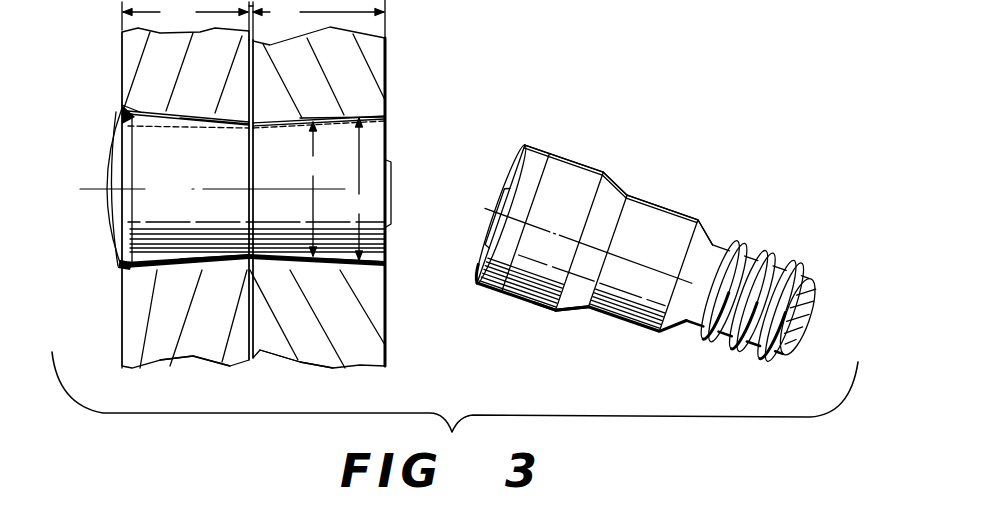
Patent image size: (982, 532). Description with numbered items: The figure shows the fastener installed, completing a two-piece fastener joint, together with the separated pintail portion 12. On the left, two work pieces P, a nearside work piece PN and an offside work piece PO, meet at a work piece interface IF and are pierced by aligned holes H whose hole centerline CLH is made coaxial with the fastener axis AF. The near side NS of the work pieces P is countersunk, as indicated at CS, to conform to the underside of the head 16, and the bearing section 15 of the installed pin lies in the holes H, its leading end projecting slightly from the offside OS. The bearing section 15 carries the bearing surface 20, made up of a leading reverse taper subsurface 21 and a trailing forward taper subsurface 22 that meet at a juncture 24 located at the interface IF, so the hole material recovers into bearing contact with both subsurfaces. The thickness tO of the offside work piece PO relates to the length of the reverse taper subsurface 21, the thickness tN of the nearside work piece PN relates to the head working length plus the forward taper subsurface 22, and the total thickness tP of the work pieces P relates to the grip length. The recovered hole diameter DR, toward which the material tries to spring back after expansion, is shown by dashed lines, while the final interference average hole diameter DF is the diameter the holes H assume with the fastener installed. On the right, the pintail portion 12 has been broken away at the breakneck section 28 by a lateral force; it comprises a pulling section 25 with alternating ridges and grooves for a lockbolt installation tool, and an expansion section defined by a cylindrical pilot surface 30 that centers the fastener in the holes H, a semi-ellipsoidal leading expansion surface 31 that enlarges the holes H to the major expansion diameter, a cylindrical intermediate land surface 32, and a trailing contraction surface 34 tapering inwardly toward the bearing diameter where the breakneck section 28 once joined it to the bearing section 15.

The work pieces P is at (120, 308).
The holes H is at (170, 110).
The near side NS is at (122, 75).
The offside OS is at (387, 78).
The countersink CS is at (125, 120).
The head 16 is at (110, 202).
The forward taper subsurface 22 is at (194, 128).
The bearing surface 20 is at (338, 118).
The breakneck section 28 is at (392, 187).
The fastener axis AF is at (235, 188).
The hole centerline CLH is at (155, 189).
The final interference average hole diameter DF is at (315, 189).
The recovered hole diameter DR is at (362, 189).
The bearing section 15 is at (200, 262).
The juncture 24 is at (265, 260).
The reverse taper subsurface 21 is at (357, 268).
The nearside work piece PN is at (220, 350).
The work piece interface IF is at (255, 333).
The offside work piece PO is at (330, 365).
The nearside work piece thickness tN is at (185, 21).
The total thickness of work pieces tP is at (236, 7).
The offside work piece thickness tO is at (319, 20).
The pintail portion 12 is at (708, 211).
The intermediate land surface 32 is at (576, 168).
The pilot surface 30 is at (648, 203).
The pulling section 25 is at (808, 265).
The trailing contraction surface 34 is at (495, 290).
The leading expansion surface 31 is at (572, 320).